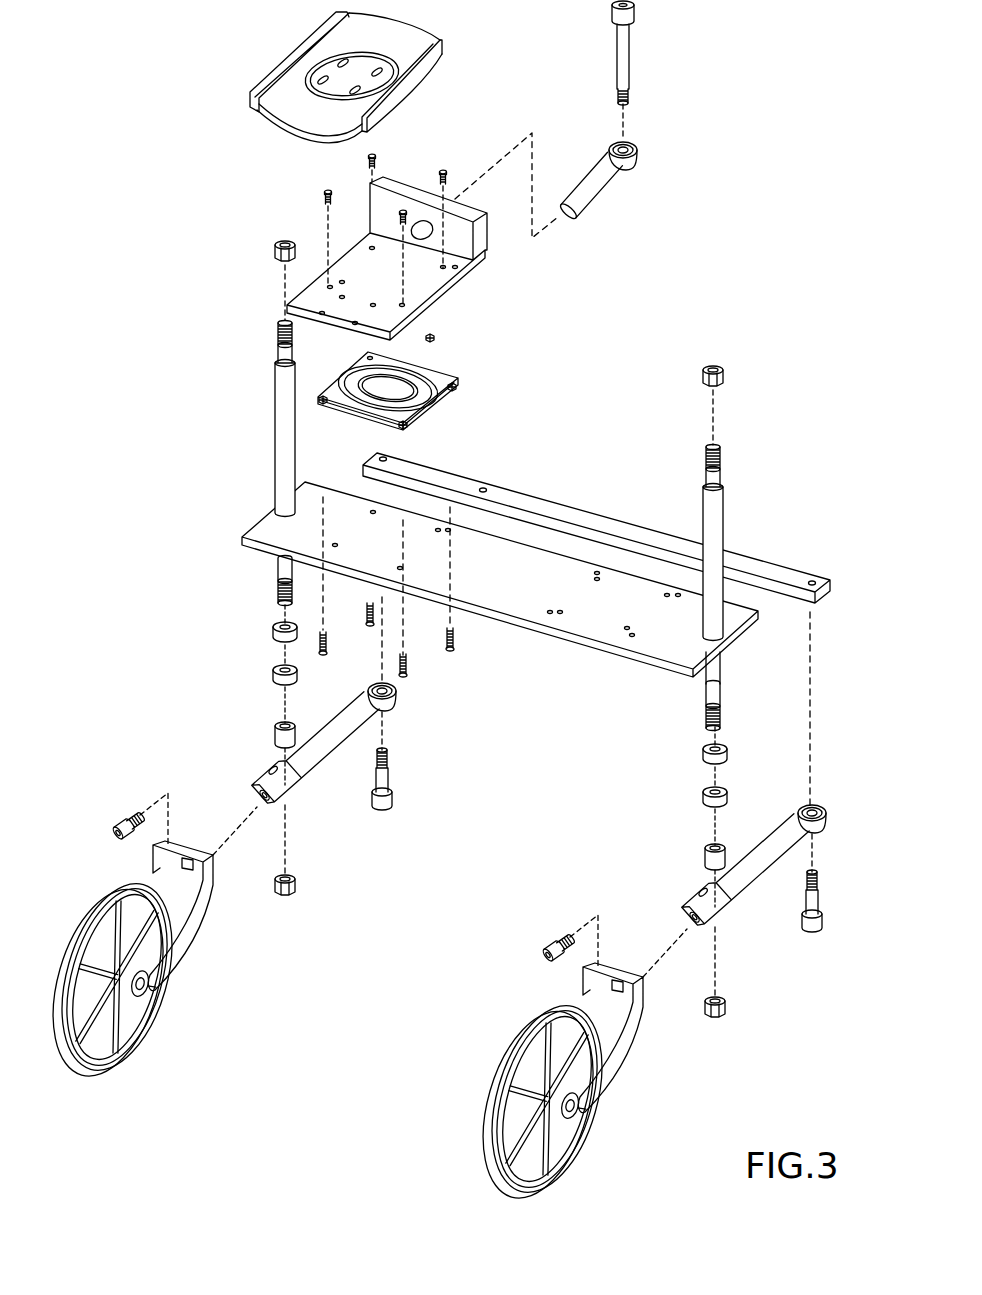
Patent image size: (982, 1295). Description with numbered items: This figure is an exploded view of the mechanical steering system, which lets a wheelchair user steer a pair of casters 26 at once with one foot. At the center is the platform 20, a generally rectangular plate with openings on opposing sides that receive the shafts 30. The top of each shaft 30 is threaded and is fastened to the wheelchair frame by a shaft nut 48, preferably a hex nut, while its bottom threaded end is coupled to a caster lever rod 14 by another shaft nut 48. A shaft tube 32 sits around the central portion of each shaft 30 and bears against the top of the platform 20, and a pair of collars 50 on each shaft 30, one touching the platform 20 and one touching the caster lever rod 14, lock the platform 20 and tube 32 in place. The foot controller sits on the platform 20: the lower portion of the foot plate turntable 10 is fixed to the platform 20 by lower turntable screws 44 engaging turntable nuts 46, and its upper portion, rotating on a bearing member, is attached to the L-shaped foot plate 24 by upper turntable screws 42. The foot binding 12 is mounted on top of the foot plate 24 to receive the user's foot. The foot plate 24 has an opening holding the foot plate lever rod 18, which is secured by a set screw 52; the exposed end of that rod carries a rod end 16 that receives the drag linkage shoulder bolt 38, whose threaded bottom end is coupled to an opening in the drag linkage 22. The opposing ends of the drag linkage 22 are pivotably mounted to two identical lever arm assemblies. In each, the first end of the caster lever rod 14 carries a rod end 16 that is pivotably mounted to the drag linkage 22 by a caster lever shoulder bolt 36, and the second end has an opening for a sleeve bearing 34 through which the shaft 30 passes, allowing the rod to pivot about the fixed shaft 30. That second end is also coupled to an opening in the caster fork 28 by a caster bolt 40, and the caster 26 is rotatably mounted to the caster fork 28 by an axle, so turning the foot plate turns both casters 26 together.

The foot plate turntable 10 is at (442, 410).
The foot binding 12 is at (252, 90).
The caster lever rod 14 is at (303, 792).
The rod end 16 is at (635, 160).
The foot plate lever rod 18 is at (587, 210).
The platform 20 is at (598, 655).
The drag linkage 22 is at (545, 497).
The foot plate 24 is at (468, 272).
The caster 26 is at (100, 906).
The caster fork 28 is at (195, 905).
The shaft 30 is at (282, 347).
The shaft tube 32 is at (282, 448).
The sleeve bearing 34 is at (276, 735).
The caster lever shoulder bolt 36 is at (392, 782).
The drag linkage shoulder bolt 38 is at (629, 65).
The caster bolt 40 is at (114, 828).
The upper turntable screw 42 is at (324, 197).
The lower turntable screw 44 is at (370, 625).
The turntable nut 46 is at (324, 405).
The shaft nut 48 is at (274, 253).
The collar 50 is at (272, 636).
The set screw 52 is at (436, 338).